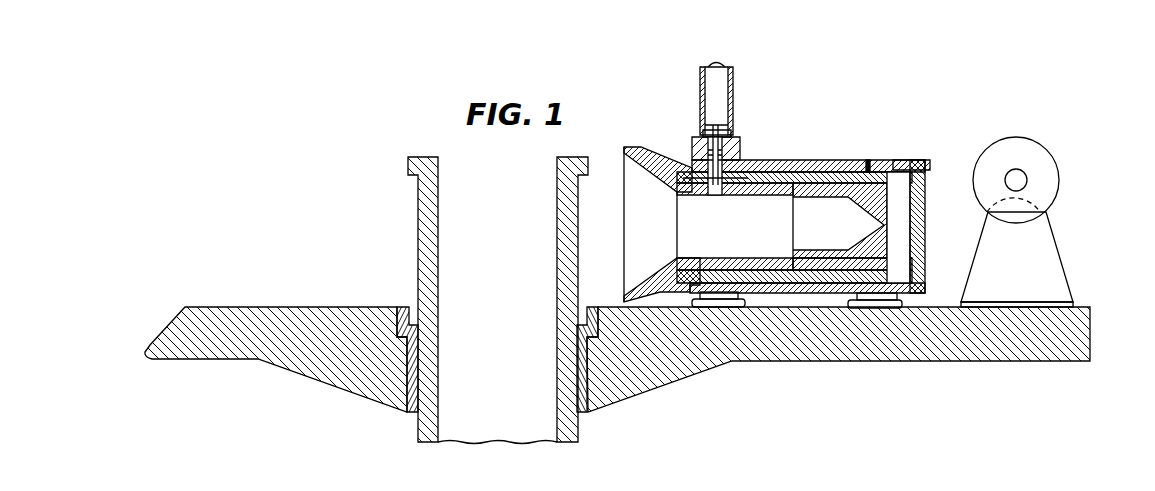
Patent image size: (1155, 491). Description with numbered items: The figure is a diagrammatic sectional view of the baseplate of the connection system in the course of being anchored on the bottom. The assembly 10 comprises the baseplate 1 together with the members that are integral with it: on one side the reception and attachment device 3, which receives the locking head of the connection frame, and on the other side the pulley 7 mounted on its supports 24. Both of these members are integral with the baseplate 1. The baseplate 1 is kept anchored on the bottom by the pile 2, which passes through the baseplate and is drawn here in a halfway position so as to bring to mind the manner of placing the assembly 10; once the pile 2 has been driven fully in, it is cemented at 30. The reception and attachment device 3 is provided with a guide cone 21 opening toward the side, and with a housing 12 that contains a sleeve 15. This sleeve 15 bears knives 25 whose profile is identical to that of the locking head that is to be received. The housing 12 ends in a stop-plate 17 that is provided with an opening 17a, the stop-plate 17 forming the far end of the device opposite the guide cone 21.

The baseplate 1 is at (283, 347).
The pile 2 is at (568, 428).
The reception and attachment device 3 is at (678, 135).
The pulley 7 is at (1038, 162).
The assembly 10 is at (320, 288).
The housing 12 is at (812, 160).
The sleeve 15 is at (840, 178).
The stop-plate 17 is at (926, 262).
The opening 17a is at (926, 194).
The guide cone 21 is at (668, 180).
The supports 24 is at (1043, 270).
The knives 25 is at (837, 262).
The cement 30 is at (583, 388).